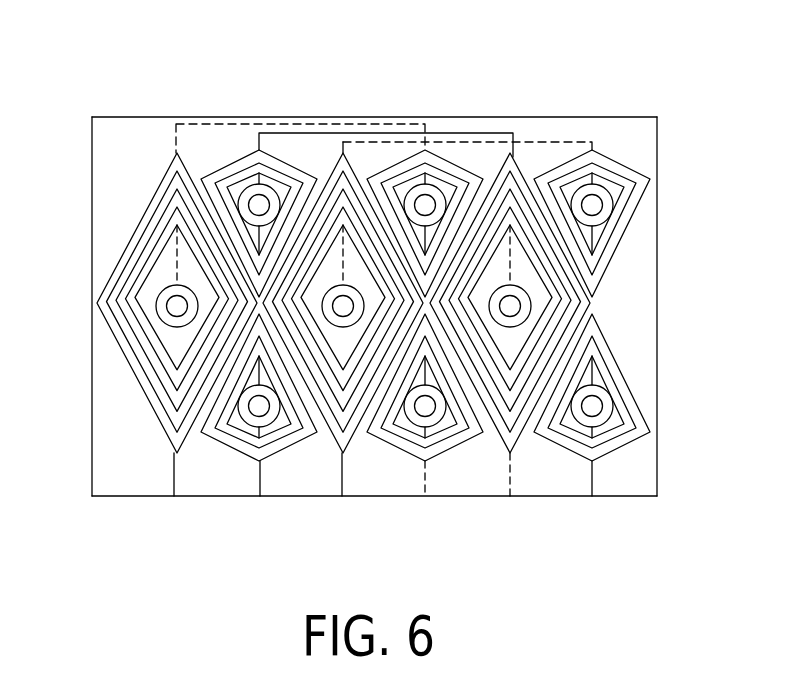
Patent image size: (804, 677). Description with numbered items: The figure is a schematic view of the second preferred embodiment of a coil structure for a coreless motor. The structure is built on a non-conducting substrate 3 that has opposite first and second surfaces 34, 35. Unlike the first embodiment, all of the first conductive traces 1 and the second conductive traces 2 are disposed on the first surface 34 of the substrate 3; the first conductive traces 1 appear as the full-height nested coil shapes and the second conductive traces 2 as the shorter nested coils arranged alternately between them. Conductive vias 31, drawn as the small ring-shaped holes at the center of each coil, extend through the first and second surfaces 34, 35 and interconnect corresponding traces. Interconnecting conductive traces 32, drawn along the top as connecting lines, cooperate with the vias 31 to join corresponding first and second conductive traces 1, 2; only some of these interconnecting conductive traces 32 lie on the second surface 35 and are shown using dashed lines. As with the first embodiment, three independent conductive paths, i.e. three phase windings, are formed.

The first conductive trace 1 is at (332, 158).
The second conductive trace 2 is at (211, 167).
The non-conducting substrate 3 is at (124, 116).
The conductive via 31 is at (166, 299).
The interconnecting conductive trace 32 is at (370, 123).
The first surface 34 is at (107, 172).
The second surface 35 is at (650, 135).